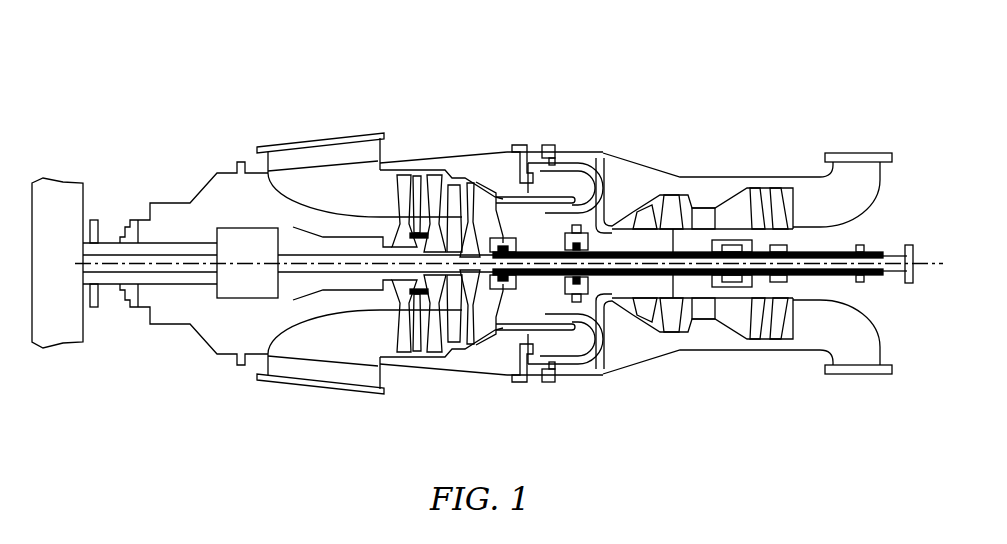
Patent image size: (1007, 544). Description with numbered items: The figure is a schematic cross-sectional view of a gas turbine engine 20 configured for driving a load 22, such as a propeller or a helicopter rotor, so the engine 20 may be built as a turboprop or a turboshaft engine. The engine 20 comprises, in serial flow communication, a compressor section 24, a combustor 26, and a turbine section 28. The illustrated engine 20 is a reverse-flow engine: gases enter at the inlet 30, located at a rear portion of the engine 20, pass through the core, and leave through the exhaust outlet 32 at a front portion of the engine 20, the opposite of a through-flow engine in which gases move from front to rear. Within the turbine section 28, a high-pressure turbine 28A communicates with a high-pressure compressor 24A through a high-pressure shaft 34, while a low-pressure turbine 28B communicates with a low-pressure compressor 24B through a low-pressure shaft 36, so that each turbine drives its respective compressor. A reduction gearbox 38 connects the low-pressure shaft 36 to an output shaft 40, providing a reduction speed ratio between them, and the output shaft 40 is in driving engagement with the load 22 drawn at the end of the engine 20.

The gas turbine engine 20 is at (692, 55).
The load 22 is at (57, 328).
The compressor section 24 is at (711, 296).
The high-pressure compressor 24A is at (680, 312).
The low-pressure compressor 24B is at (783, 323).
The combustor 26 is at (566, 170).
The turbine section 28 is at (477, 303).
The high-pressure turbine 28A is at (540, 307).
The low-pressure turbine 28B is at (440, 338).
The inlet 30 is at (856, 135).
The exhaust outlet 32 is at (312, 128).
The high-pressure shaft 34 is at (612, 210).
The low-pressure shaft 36 is at (329, 251).
The reduction gearbox 38 is at (238, 299).
The output shaft 40 is at (142, 283).